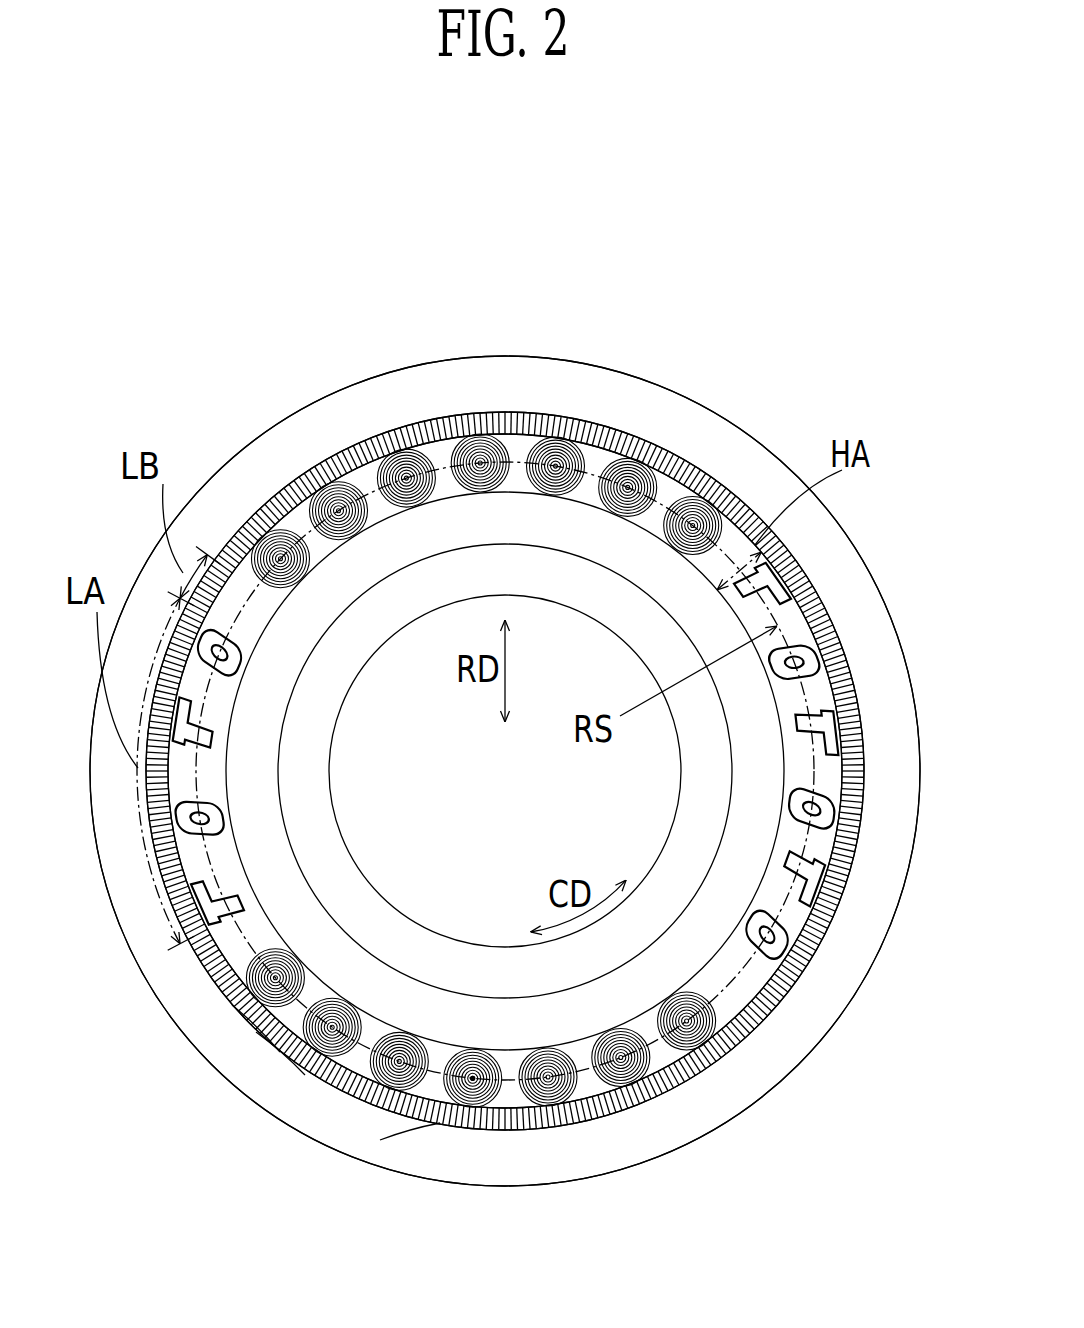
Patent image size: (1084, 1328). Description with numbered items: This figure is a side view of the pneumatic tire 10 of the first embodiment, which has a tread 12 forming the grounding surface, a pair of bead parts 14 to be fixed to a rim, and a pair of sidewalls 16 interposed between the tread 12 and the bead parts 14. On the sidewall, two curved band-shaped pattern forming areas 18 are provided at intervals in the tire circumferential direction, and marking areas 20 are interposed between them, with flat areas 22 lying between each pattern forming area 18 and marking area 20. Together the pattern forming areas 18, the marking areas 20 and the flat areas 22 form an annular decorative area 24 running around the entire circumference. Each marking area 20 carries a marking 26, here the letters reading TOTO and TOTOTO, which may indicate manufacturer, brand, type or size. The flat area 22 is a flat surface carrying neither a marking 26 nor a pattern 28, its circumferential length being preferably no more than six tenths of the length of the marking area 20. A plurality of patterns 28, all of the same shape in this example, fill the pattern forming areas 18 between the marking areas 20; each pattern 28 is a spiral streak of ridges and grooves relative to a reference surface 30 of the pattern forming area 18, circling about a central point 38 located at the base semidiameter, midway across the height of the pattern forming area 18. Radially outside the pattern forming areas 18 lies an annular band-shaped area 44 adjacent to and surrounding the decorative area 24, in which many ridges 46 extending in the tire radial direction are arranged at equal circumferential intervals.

The pneumatic tire 10 is at (513, 206).
The tread 12 is at (302, 410).
The bead parts 14 is at (338, 815).
The sidewalls 16 is at (355, 975).
The pattern forming area 18 is at (605, 455).
The marking area 20 is at (177, 697).
The flat area 22 is at (225, 597).
The decorative area 24 is at (410, 1118).
The marking 26 is at (183, 818).
The pattern 28 is at (398, 450).
The reference surface 30 is at (682, 1065).
The central point 38 is at (473, 1083).
The band-shaped area 44 is at (258, 1032).
The ridges 46 is at (278, 1055).